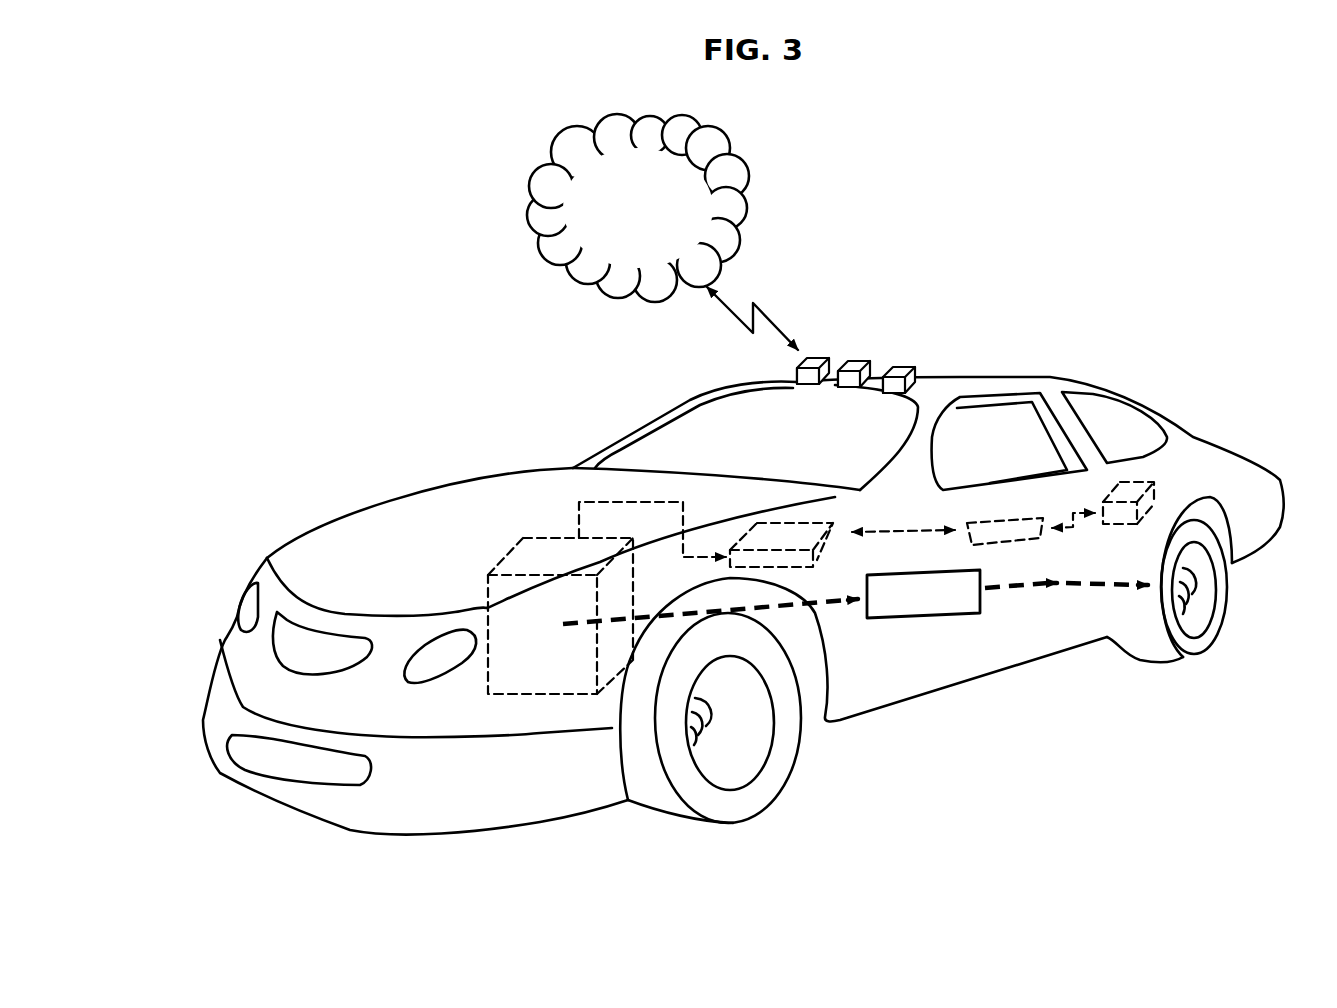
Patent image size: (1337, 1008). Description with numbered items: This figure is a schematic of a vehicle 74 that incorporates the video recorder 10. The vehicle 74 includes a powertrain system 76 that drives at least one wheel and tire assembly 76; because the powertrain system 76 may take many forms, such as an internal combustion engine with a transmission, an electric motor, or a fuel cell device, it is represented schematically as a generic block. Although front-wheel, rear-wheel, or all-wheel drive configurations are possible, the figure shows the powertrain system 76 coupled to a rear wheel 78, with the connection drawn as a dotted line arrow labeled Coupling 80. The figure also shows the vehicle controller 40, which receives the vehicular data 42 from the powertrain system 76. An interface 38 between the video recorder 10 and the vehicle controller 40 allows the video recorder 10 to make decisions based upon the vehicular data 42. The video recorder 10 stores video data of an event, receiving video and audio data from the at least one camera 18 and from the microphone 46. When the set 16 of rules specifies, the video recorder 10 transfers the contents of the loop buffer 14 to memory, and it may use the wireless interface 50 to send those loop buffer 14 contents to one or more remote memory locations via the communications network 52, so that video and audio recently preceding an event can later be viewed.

The video recorder 10 is at (1150, 486).
The loop buffer 14 is at (1153, 493).
The set of rules 16 is at (1157, 500).
The camera 18 is at (867, 360).
The interface 38 is at (1013, 545).
The vehicle controller 40 is at (745, 530).
The vehicular data 42 is at (578, 500).
The microphone 46 is at (913, 366).
The wireless interface 50 is at (817, 358).
The communications network 52 is at (553, 147).
The vehicle 74 is at (485, 337).
The powertrain system 76 is at (763, 798).
The rear wheel 78 is at (1190, 648).
The coupling 80 is at (938, 618).